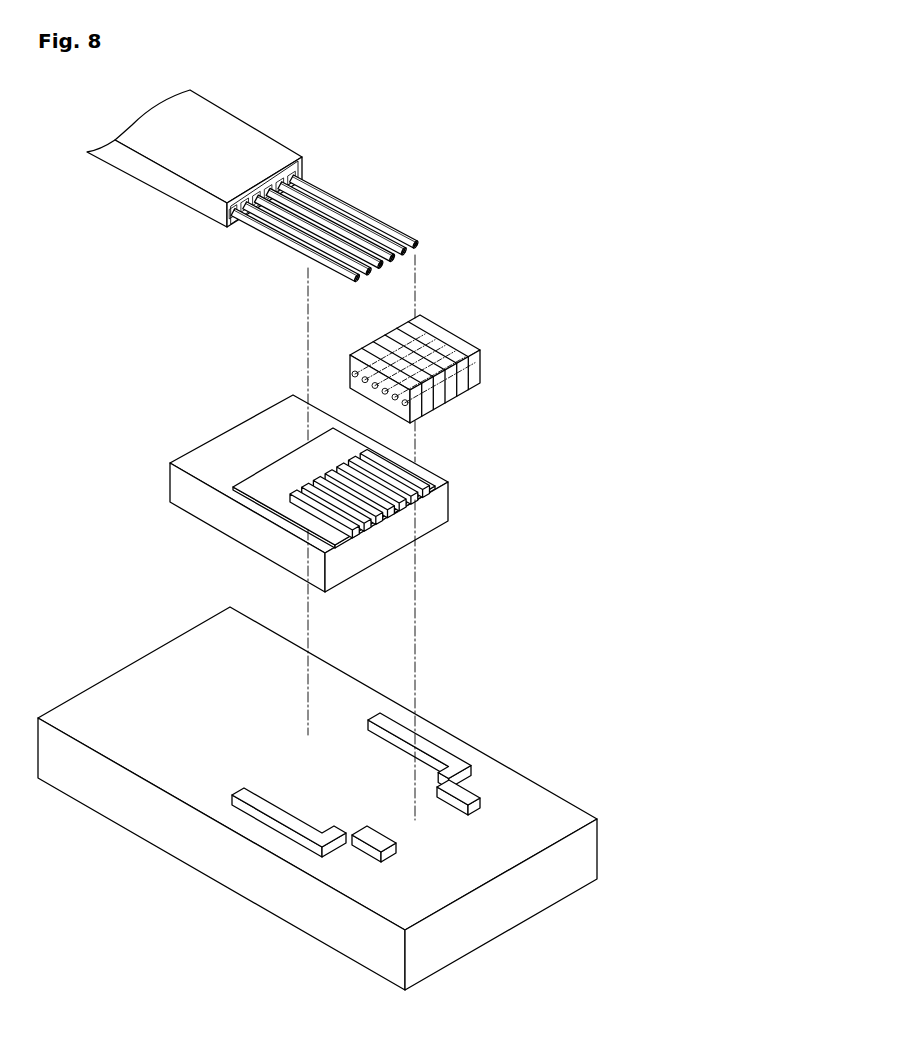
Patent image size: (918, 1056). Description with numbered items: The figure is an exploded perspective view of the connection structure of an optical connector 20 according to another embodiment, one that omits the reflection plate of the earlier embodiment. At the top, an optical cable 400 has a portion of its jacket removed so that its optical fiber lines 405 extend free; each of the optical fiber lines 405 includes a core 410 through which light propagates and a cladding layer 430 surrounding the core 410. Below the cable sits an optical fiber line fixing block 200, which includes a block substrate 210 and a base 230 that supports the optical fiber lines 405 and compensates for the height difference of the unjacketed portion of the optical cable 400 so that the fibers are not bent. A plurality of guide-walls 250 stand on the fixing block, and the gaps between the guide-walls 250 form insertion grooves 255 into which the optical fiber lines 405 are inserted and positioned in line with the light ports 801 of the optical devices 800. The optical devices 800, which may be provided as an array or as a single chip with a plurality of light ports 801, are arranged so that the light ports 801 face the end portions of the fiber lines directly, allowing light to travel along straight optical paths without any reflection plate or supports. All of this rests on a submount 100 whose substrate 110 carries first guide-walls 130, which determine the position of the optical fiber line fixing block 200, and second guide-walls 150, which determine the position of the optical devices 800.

The optical connector 20 is at (84, 89).
The optical cable 400 is at (300, 173).
The optical fiber lines 405 is at (372, 228).
The core 410 is at (419, 247).
The cladding layer 430 is at (418, 243).
The optical devices 800 is at (407, 377).
The light ports 801 is at (365, 357).
The optical fiber line fixing block 200 is at (306, 494).
The block substrate 210 is at (250, 536).
The base 230 is at (256, 492).
The guide-walls 250 is at (318, 513).
The alignment grooves 255 is at (357, 516).
The submount 100 is at (319, 798).
The substrate 110 is at (112, 808).
The first guide-walls 130 is at (430, 742).
The second guide-walls 150 is at (468, 792).